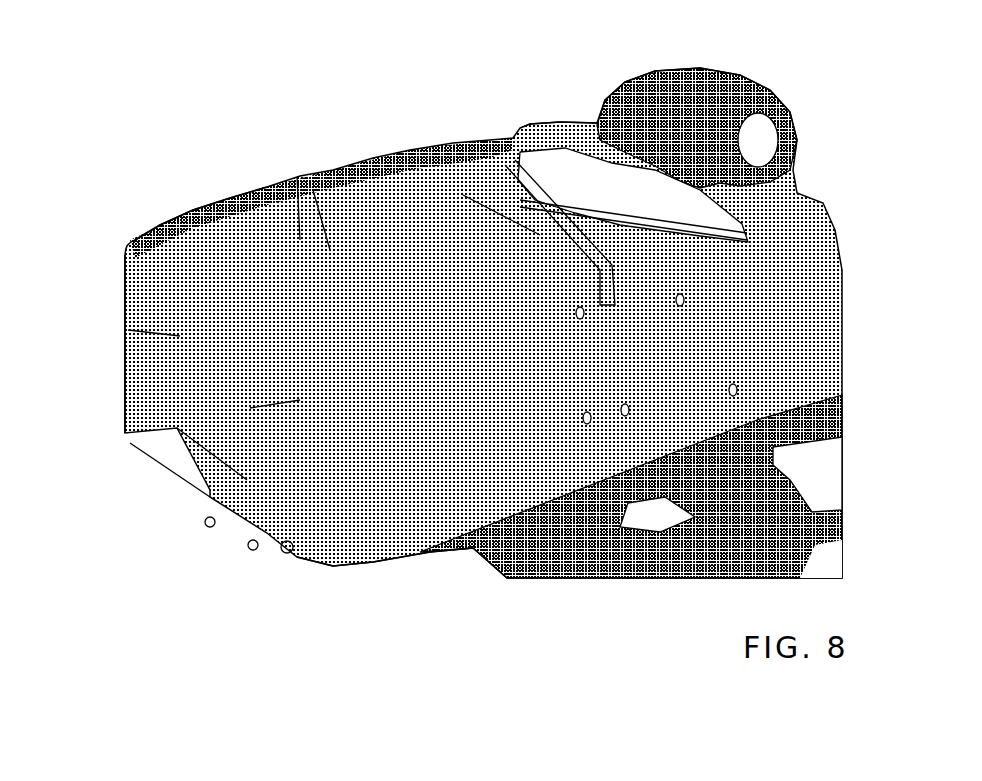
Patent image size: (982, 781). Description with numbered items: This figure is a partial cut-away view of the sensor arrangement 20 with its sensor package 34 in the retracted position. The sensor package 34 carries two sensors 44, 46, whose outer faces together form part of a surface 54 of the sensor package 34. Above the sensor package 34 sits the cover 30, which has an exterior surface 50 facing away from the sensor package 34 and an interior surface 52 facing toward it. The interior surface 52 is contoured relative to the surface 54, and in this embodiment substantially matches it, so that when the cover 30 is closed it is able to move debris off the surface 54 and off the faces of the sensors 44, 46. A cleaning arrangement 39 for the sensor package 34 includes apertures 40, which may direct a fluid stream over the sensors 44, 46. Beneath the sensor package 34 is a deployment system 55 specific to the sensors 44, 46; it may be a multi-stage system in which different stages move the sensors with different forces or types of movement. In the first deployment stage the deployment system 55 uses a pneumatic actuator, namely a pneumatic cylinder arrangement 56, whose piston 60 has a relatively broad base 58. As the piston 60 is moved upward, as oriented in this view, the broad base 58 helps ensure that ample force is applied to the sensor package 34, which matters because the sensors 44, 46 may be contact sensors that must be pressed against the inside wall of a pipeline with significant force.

The sensor arrangement 20 is at (446, 119).
The cover 30 is at (200, 200).
The sensor package 34 is at (160, 333).
The cleaning arrangement 39 is at (463, 195).
The apertures 40 is at (213, 197).
The sensor 44 is at (190, 213).
The sensor 46 is at (542, 229).
The exterior surface 50 is at (378, 185).
The interior surface 52 is at (313, 190).
The surface 54 is at (297, 177).
The deployment system 55 is at (250, 408).
The pneumatic cylinder arrangement 56 is at (210, 490).
The base 58 is at (370, 568).
The piston 60 is at (287, 547).